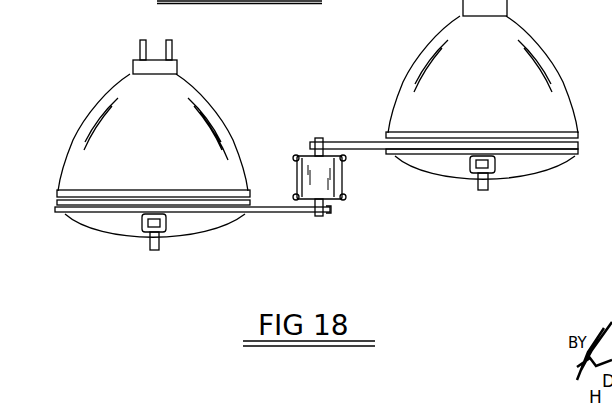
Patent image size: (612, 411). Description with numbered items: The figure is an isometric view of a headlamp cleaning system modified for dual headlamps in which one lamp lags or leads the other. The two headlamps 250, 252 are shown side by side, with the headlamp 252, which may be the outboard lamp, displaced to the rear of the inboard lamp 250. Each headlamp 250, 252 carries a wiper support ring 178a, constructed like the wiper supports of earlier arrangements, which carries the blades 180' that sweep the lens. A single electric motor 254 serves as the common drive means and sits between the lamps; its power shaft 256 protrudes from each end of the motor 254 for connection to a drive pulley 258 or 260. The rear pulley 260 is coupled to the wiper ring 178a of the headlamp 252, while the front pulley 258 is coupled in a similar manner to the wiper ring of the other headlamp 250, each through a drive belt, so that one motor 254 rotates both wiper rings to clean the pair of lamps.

The wiper support ring 178a is at (157, 190).
The inboard headlamp 250 is at (112, 222).
The outboard headlamp 252 is at (530, 165).
The wiper blades 180' is at (332, 227).
The electric motor 254 is at (322, 170).
The power shaft 256 is at (318, 216).
The front drive pulley 258 is at (330, 211).
The rear drive pulley 260 is at (295, 124).